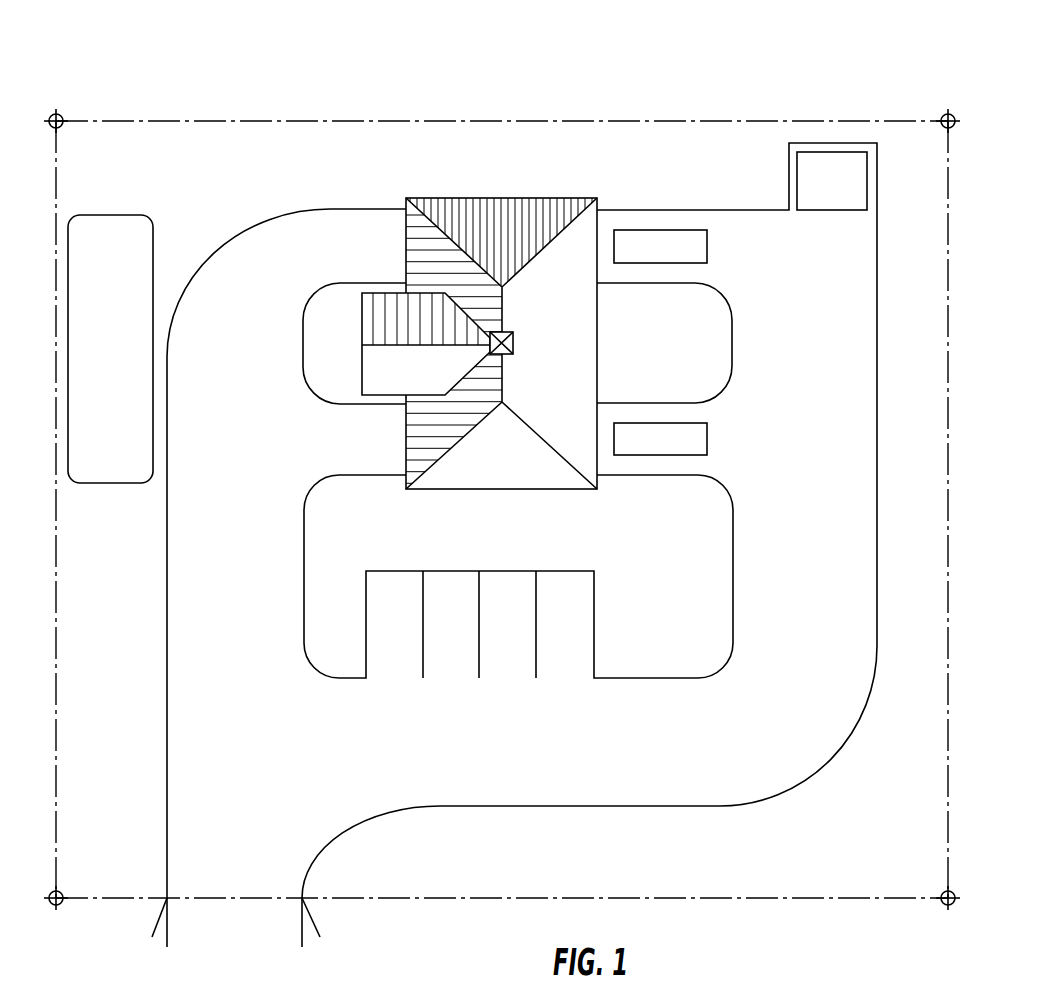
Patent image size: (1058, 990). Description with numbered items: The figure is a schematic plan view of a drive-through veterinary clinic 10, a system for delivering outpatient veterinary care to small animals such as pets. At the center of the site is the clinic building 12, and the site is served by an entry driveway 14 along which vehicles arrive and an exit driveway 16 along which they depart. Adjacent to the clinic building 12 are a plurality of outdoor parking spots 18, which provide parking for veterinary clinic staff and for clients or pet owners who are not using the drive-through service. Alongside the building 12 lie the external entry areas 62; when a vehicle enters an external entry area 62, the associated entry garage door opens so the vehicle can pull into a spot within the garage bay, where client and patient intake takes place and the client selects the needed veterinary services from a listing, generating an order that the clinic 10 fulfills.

The drive-through veterinary clinic 10 is at (806, 85).
The clinic building 12 is at (502, 208).
The entry driveway 14 is at (695, 710).
The exit driveway 16 is at (212, 677).
The outdoor parking spots 18 is at (562, 651).
The external entry area 62 is at (677, 240).